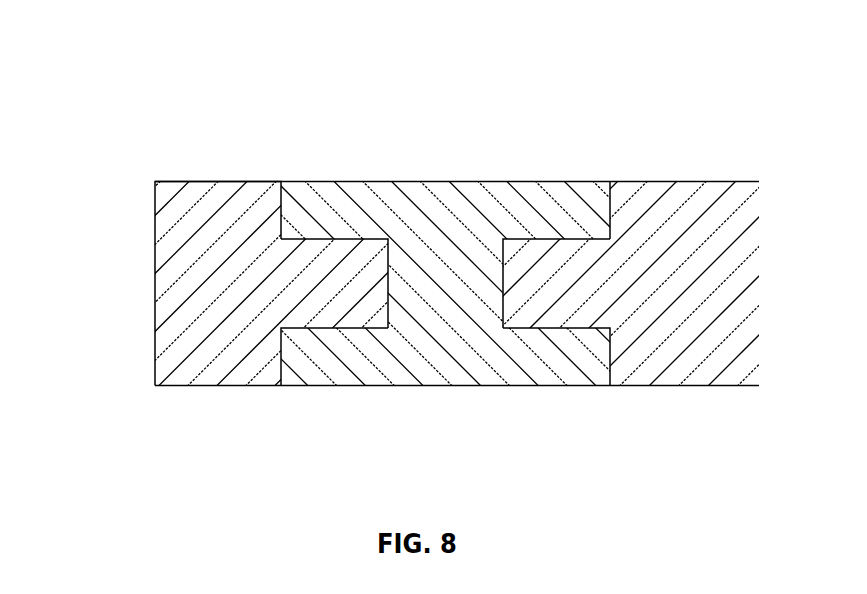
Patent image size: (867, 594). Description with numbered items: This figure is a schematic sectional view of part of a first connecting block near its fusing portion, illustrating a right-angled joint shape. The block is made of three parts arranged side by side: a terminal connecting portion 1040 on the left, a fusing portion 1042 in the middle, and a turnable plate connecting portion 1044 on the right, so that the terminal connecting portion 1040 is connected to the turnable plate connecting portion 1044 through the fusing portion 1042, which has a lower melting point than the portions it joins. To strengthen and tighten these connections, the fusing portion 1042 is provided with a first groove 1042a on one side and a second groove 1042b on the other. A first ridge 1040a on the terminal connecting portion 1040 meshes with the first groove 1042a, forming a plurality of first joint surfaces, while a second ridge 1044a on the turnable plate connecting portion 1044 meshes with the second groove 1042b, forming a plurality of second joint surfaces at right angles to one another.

The terminal connecting portion 1040 is at (218, 207).
The first ridge 1040a is at (333, 288).
The fusing portion 1042 is at (477, 212).
The first groove 1042a is at (352, 328).
The second groove 1042b is at (527, 328).
The turnable plate connecting portion 1044 is at (703, 212).
The second ridge 1044a is at (568, 300).